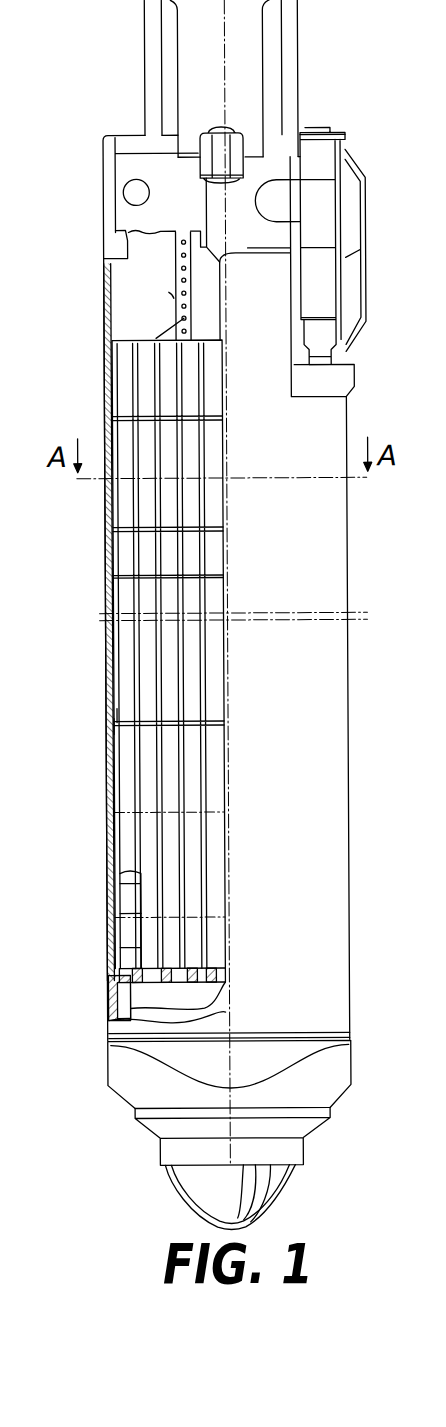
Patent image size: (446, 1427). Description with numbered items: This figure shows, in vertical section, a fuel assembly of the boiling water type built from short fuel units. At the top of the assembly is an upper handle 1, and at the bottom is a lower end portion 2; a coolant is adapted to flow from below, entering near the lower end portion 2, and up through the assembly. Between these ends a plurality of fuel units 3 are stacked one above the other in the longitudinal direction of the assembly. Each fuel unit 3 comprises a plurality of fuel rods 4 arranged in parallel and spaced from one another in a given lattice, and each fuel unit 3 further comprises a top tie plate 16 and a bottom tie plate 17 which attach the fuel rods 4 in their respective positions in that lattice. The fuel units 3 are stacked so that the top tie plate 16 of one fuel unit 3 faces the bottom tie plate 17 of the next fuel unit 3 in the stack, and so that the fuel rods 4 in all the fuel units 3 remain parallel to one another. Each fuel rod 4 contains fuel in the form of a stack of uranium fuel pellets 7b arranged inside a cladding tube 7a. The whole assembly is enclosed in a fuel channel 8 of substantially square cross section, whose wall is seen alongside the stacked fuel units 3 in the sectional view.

The upper handle 1 is at (291, 50).
The lower end portion 2 is at (292, 1152).
The fuel unit 3 is at (97, 479).
The fuel rod 4 is at (126, 842).
The cladding tube 7a is at (114, 860).
The fuel pellets 7b is at (124, 923).
The fuel channel 8 is at (346, 720).
The top tie plate 16 is at (110, 712).
The bottom tie plate 17 is at (110, 730).